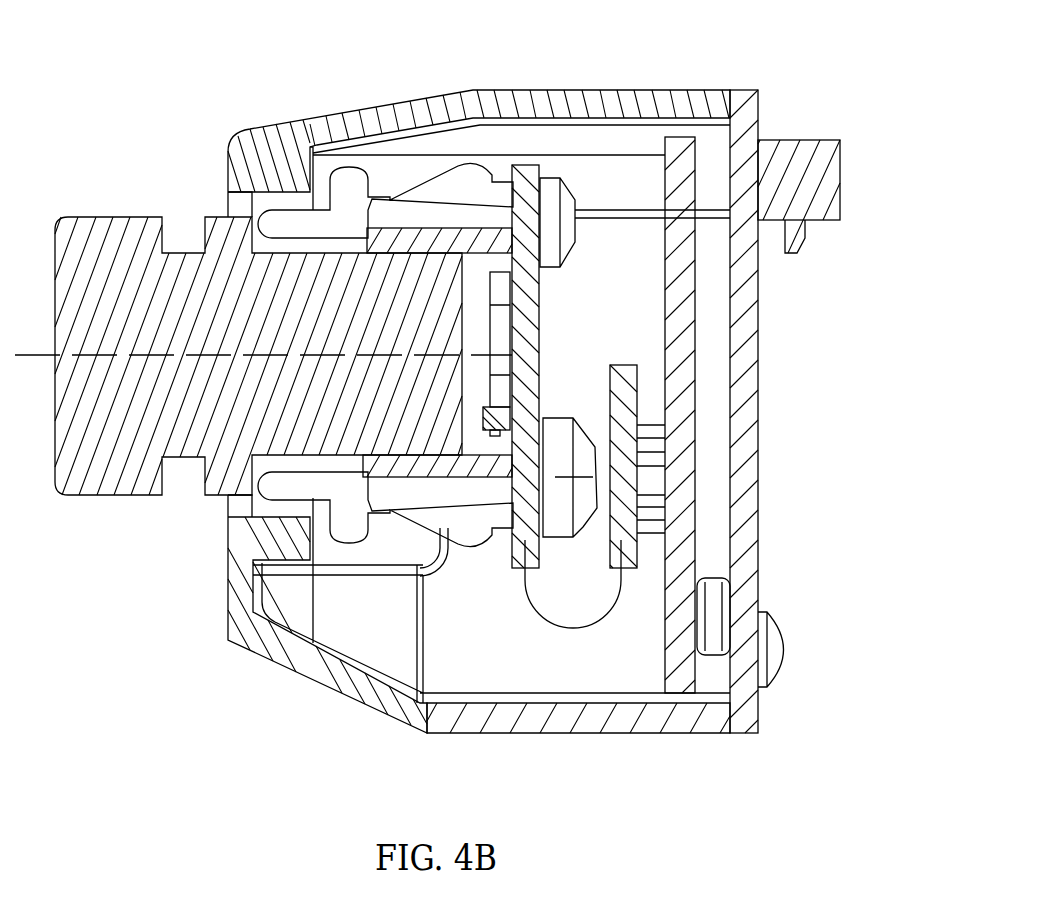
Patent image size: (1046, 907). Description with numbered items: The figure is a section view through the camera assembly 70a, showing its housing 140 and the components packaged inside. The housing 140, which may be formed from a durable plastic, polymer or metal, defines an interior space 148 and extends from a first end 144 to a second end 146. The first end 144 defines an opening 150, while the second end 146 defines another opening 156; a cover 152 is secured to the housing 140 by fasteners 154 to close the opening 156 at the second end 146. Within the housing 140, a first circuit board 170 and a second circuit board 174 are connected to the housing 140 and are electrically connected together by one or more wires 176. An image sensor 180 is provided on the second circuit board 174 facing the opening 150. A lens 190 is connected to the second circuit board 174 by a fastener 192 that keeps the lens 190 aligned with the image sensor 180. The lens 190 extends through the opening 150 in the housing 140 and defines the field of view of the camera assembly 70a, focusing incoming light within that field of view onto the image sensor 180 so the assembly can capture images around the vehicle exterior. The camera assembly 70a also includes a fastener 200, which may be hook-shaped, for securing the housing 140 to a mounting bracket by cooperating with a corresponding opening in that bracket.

The camera assembly 70a is at (712, 50).
The housing 140 is at (571, 62).
The first end 144 is at (180, 590).
The second end 146 is at (719, 756).
The interior space 148 is at (375, 128).
The opening 150 is at (205, 516).
The cover 152 is at (760, 372).
The fasteners 154 is at (793, 650).
The opening 156 is at (497, 668).
The first circuit board 170 is at (680, 522).
The second circuit board 174 is at (522, 330).
The wires 176 is at (576, 630).
The image sensor 180 is at (492, 328).
The lens 190 is at (122, 232).
The fastener 192 is at (340, 524).
The fastener 200 is at (806, 246).